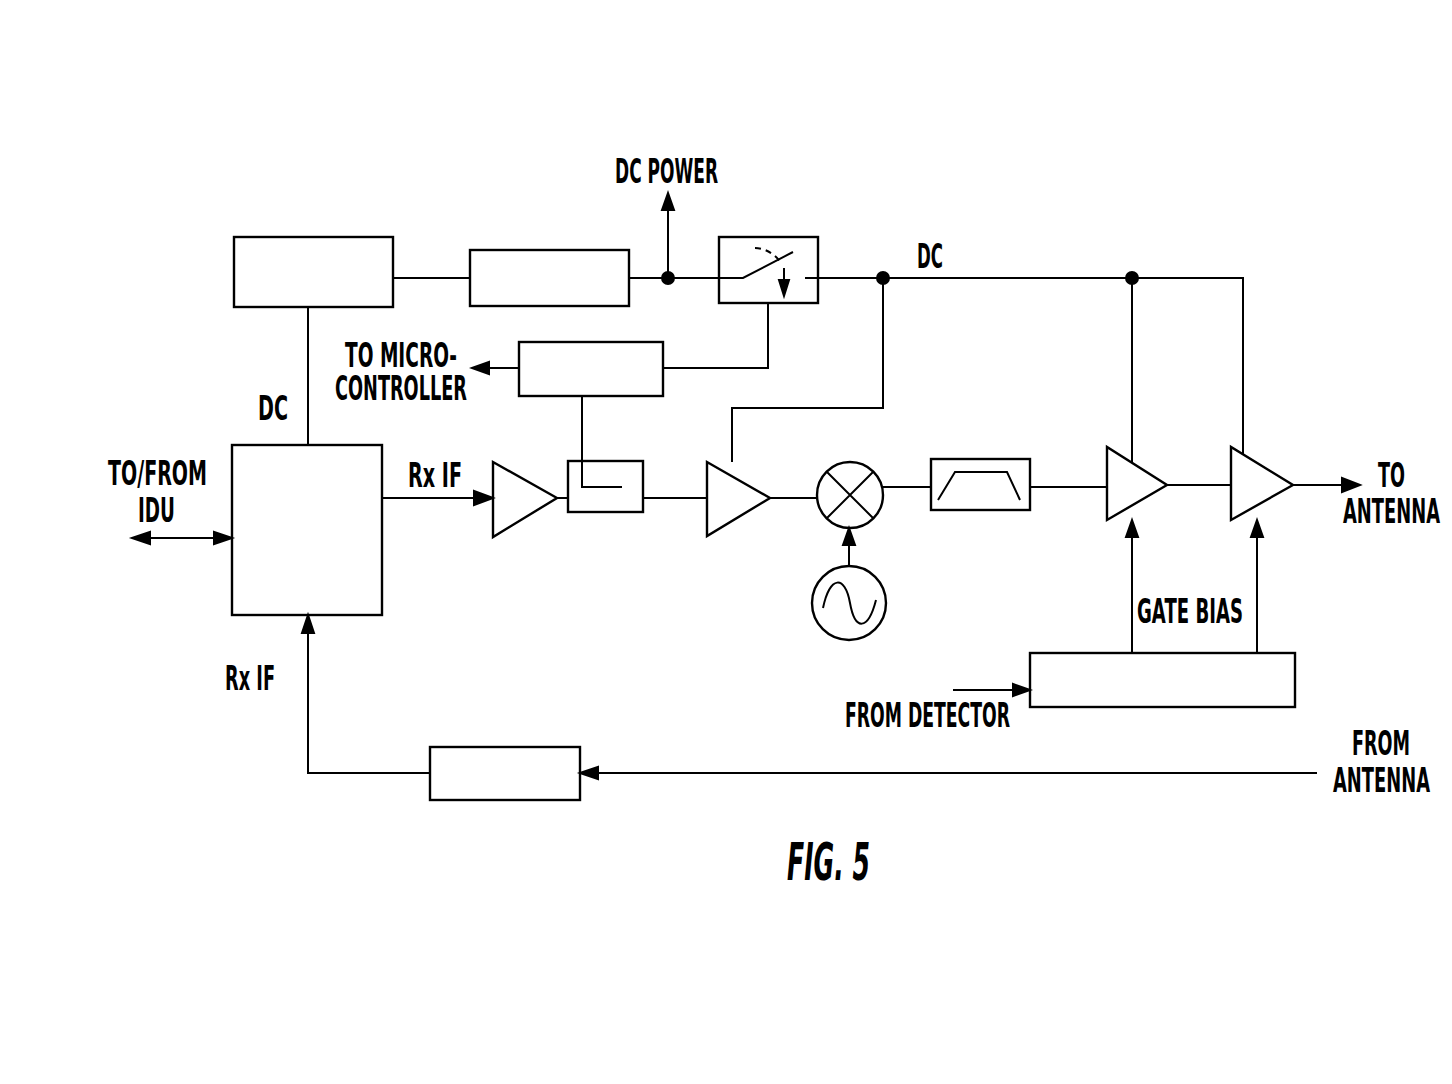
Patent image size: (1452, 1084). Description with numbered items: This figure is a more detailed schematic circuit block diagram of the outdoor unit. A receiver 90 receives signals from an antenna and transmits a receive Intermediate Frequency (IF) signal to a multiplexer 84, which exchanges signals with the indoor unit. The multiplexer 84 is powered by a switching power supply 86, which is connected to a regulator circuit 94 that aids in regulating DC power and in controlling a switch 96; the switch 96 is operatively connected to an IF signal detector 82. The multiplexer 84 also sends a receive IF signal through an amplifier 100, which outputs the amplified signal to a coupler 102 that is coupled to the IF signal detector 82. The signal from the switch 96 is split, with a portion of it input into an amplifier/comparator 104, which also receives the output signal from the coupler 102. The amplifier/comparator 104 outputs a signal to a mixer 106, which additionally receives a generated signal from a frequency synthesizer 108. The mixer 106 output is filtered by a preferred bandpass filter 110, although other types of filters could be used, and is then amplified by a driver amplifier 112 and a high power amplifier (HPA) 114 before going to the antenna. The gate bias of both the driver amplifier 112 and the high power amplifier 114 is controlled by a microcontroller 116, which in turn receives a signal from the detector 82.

The IF signal detector 82 is at (604, 342).
The multiplexer 84 is at (382, 568).
The switching power supply 86 is at (309, 236).
The receiver 90 is at (492, 747).
The regulator circuit 94 is at (505, 250).
The switch 96 is at (810, 236).
The amplifier 100 is at (522, 522).
The coupler 102 is at (617, 461).
The amplifier/comparator 104 is at (725, 532).
The mixer 106 is at (820, 478).
The frequency synthesizer 108 is at (887, 595).
The bandpass filter 110 is at (1008, 458).
The driver amplifier 112 is at (1107, 495).
The high power amplifier (HPA) 114 is at (1272, 468).
The microcontroller 116 is at (1297, 668).